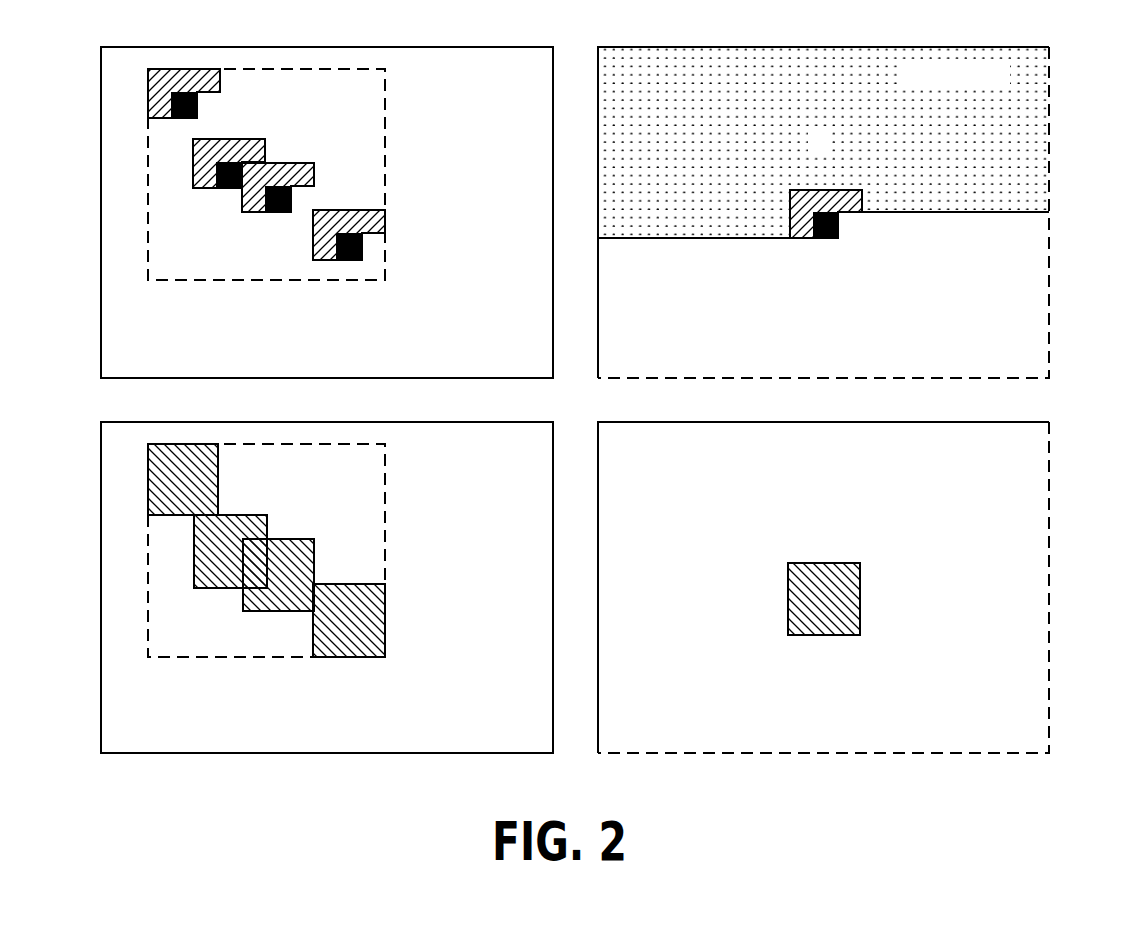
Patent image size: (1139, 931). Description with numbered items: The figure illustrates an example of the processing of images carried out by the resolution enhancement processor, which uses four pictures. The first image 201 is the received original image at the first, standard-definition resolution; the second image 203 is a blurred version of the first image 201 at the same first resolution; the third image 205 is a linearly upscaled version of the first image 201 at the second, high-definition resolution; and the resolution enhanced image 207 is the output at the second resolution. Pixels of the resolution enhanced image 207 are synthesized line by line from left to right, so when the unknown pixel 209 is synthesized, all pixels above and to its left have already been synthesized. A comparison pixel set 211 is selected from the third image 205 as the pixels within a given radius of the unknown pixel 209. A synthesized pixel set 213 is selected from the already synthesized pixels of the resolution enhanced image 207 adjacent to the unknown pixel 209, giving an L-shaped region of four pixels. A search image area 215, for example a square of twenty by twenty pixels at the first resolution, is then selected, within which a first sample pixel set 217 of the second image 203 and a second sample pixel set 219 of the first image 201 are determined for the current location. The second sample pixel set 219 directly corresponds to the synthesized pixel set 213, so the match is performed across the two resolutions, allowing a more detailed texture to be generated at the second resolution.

The first image 201 is at (101, 213).
The second image 203 is at (101, 588).
The third image 205 is at (1049, 620).
The resolution enhanced image 207 is at (1049, 243).
The unknown pixel 209 is at (839, 228).
The comparison pixel set 211 is at (860, 598).
The synthesized pixel set 213 is at (803, 238).
The search image area 215 is at (385, 147).
The first sample pixel set 217 is at (218, 478).
The second sample pixel set 219 is at (216, 78).